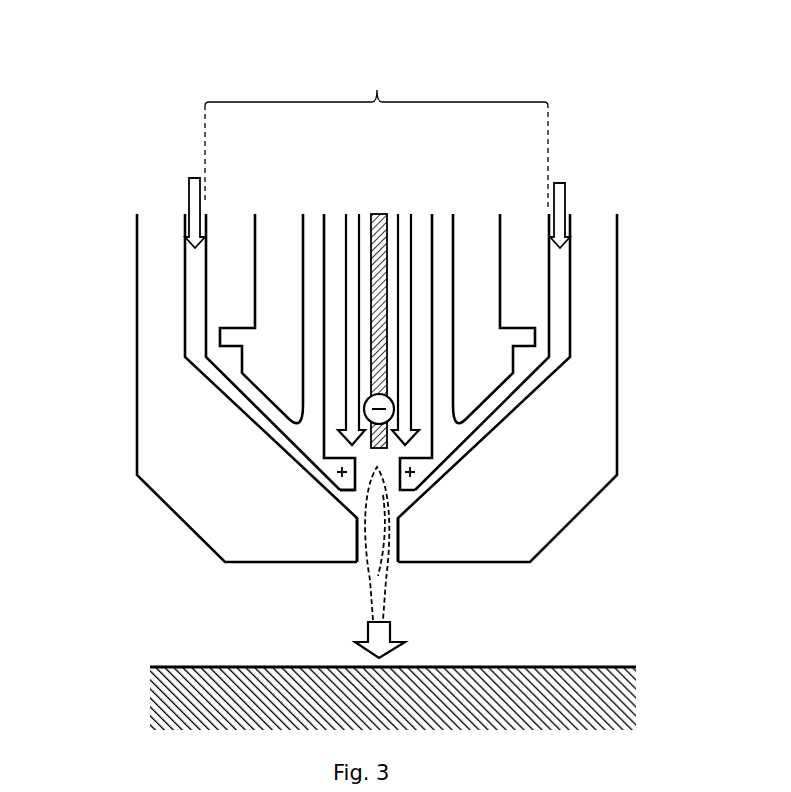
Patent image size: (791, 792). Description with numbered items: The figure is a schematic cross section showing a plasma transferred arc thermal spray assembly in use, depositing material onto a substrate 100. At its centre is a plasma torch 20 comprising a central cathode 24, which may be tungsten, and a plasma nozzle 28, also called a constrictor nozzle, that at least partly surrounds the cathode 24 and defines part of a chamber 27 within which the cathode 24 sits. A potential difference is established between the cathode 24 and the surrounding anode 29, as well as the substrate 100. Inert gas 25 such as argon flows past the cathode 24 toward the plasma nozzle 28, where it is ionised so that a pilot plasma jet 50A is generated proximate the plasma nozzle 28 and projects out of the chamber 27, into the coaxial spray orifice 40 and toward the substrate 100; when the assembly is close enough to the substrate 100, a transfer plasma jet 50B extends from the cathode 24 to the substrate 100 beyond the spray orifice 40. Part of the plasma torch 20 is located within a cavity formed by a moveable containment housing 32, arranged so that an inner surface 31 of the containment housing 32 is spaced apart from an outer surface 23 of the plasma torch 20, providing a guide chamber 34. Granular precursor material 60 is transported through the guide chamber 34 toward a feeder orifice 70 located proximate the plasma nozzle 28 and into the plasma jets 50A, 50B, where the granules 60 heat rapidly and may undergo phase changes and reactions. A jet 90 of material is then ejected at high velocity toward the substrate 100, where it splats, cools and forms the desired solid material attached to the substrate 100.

The plasma torch 20 is at (376, 132).
The granular precursor material 60 is at (198, 157).
The guide chamber 34 is at (197, 278).
The containment housing 32 is at (165, 342).
The outer surface of the plasma torch 23 is at (235, 384).
The inner surface of the containment housing 31 is at (259, 427).
The anode 29 is at (333, 467).
The plasma nozzle 28 is at (395, 467).
The chamber 27 is at (330, 223).
The inert gas 25 is at (406, 238).
The cathode 24 is at (376, 212).
The feeder orifice 70 is at (337, 497).
The spray orifice 40 is at (360, 562).
The pilot plasma jet 50A is at (382, 518).
The transfer plasma jet 50B is at (388, 587).
The jet of material 90 is at (392, 631).
The substrate 100 is at (217, 680).